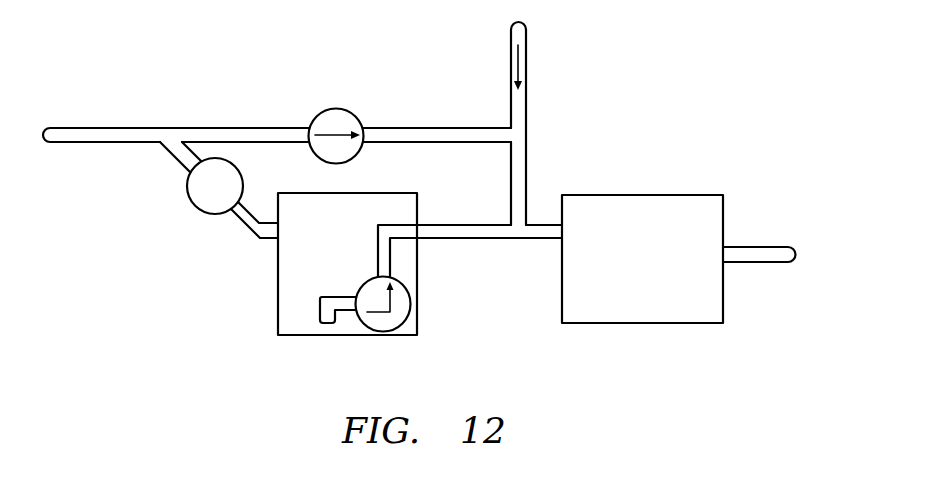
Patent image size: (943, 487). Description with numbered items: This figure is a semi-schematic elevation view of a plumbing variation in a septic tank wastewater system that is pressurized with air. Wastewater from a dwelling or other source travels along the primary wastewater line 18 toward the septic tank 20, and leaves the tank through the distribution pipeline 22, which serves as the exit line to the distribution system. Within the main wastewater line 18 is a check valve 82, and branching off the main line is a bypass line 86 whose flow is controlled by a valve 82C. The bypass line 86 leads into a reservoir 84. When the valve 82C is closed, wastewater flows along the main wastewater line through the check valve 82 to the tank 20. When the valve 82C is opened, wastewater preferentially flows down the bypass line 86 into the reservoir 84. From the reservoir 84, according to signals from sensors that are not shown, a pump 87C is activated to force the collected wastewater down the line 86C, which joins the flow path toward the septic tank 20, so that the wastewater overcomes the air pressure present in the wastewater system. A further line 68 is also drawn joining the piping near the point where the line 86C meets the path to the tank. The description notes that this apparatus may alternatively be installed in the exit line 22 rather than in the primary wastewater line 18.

The wastewater line 18 is at (89, 128).
The check valve 82 is at (337, 108).
The valve 82C is at (195, 207).
The bypass line 86 is at (250, 229).
The reservoir 84 is at (338, 335).
The line 86C is at (468, 239).
The pump 87C is at (409, 313).
The inlet line 68 is at (527, 97).
The septic tank 20 is at (652, 195).
The distribution pipeline 22 is at (763, 247).